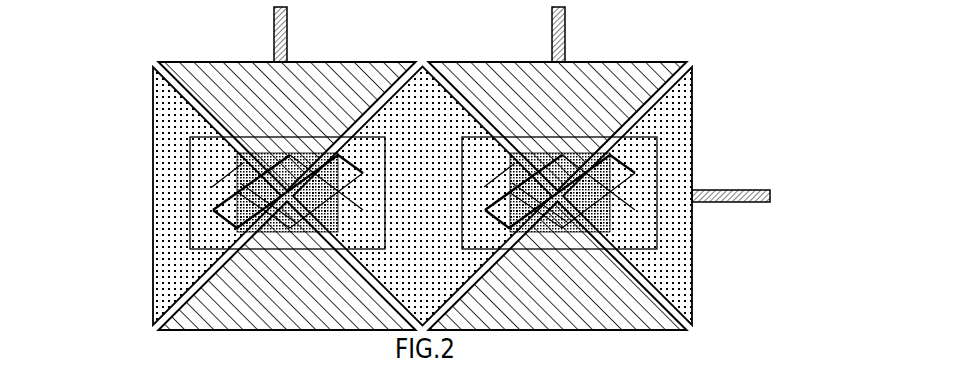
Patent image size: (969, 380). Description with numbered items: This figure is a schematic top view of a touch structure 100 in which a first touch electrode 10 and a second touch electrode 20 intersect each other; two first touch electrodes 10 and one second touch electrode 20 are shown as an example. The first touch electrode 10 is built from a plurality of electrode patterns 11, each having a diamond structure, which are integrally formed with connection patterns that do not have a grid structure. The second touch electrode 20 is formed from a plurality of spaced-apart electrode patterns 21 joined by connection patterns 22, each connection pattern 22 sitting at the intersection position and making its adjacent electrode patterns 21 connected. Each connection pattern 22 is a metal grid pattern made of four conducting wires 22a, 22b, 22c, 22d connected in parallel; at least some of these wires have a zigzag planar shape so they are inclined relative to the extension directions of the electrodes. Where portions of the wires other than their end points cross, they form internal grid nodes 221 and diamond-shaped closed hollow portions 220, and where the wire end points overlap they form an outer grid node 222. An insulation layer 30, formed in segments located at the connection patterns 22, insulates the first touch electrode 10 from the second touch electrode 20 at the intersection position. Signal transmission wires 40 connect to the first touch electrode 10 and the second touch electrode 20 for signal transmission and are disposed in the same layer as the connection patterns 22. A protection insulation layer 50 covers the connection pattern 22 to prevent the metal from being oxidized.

The touch structure 100 is at (768, 36).
The first touch electrode 10 is at (250, 63).
The electrode pattern 11 is at (245, 82).
The second touch electrode 20 is at (100, 93).
The electrode pattern 21 is at (153, 94).
The connection pattern 22 is at (133, 148).
The conducting wire 22a is at (213, 186).
The conducting wire 22b is at (237, 192).
The conducting wire 22c is at (213, 210).
The conducting wire 22d is at (237, 228).
The insulation layer 30 is at (240, 245).
The signal transmission wire 40 is at (553, 35).
The protection insulation layer 50 is at (190, 248).
The closed hollow portion 220 is at (305, 153).
The internal grid node 221 is at (273, 153).
The outer grid node 222 is at (341, 227).